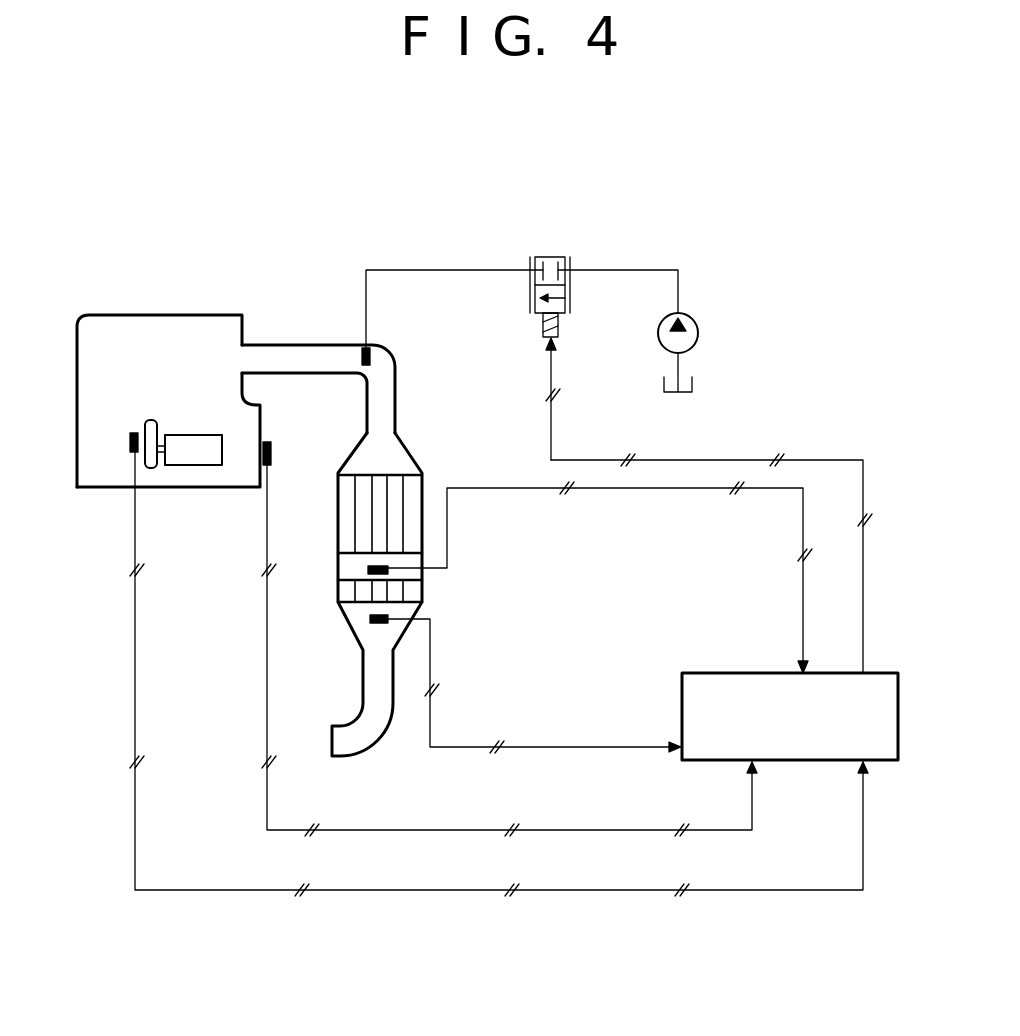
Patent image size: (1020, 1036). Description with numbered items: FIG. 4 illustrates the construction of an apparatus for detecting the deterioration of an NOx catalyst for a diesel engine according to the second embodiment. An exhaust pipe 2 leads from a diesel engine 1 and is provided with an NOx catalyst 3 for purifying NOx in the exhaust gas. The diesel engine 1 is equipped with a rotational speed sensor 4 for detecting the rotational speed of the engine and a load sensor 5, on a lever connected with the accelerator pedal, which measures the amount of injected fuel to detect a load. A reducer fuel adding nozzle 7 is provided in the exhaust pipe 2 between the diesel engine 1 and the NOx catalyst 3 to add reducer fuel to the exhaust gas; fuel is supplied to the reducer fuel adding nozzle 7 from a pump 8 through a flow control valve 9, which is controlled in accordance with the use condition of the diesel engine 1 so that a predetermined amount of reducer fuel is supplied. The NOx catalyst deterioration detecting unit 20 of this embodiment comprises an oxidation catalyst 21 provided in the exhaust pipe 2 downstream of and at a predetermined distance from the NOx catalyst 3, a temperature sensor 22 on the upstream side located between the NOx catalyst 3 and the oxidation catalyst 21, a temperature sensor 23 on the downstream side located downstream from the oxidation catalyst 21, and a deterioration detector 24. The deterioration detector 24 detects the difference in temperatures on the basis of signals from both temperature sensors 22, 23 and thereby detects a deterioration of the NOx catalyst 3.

The diesel engine 1 is at (150, 318).
The exhaust pipe 2 is at (283, 345).
The NOx catalyst 3 is at (439, 615).
The rotational speed sensor 4 is at (272, 447).
The load sensor 5 is at (132, 450).
The reducer fuel adding nozzle 7 is at (383, 343).
The pump 8 is at (699, 328).
The flow control valve 9 is at (560, 256).
The NOx catalyst deterioration detecting unit 20 is at (590, 617).
The oxidation catalyst 21 is at (338, 530).
The temperature sensor on the upstream side 22 is at (393, 567).
The temperature sensor on the downstream side 23 is at (393, 614).
The deterioration detector 24 is at (681, 735).